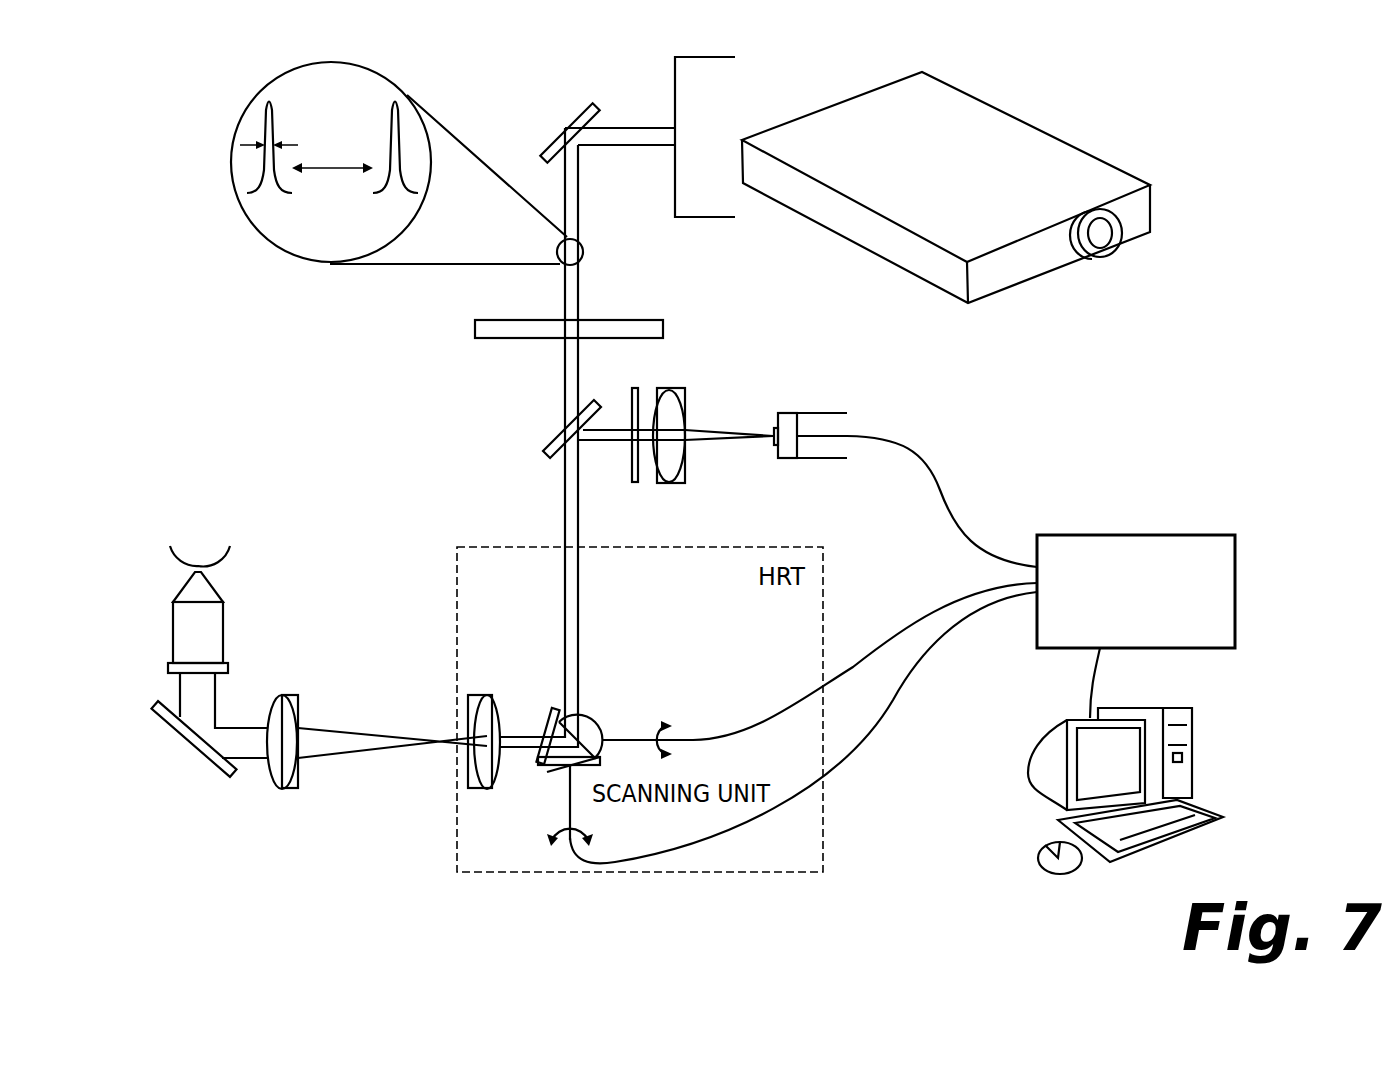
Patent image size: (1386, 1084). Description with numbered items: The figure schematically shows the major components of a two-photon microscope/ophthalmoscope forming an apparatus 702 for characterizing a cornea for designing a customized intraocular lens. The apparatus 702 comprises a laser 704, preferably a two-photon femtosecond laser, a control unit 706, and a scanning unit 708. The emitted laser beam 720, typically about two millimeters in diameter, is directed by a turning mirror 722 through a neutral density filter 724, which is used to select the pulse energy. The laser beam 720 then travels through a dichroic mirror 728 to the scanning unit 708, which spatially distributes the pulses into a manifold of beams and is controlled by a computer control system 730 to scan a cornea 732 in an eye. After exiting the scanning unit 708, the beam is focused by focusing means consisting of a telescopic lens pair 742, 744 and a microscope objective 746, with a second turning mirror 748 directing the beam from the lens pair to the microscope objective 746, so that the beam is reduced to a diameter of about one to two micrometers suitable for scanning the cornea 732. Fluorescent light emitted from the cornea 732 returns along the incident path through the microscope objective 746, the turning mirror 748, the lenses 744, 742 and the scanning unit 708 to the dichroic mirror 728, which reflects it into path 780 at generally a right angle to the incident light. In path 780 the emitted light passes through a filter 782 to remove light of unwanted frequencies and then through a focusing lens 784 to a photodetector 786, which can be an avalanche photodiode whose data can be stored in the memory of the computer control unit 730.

The apparatus 702 is at (185, 347).
The laser 704 is at (1078, 157).
The control unit 706 is at (1192, 533).
The scanning unit 708 is at (587, 717).
The laser beam 720 is at (633, 127).
The turning mirror 722 is at (560, 142).
The neutral density filter 724 is at (497, 320).
The dichroic mirror 728 is at (550, 453).
The computer control system 730 is at (1192, 710).
The cornea 732 is at (223, 558).
The telescopic lens 742 is at (468, 780).
The telescopic lens 744 is at (270, 782).
The microscope objective 746 is at (173, 620).
The second turning mirror 748 is at (160, 712).
The path 780 is at (608, 443).
The filter 782 is at (640, 483).
The focusing lens 784 is at (685, 410).
The photodetector 786 is at (805, 413).